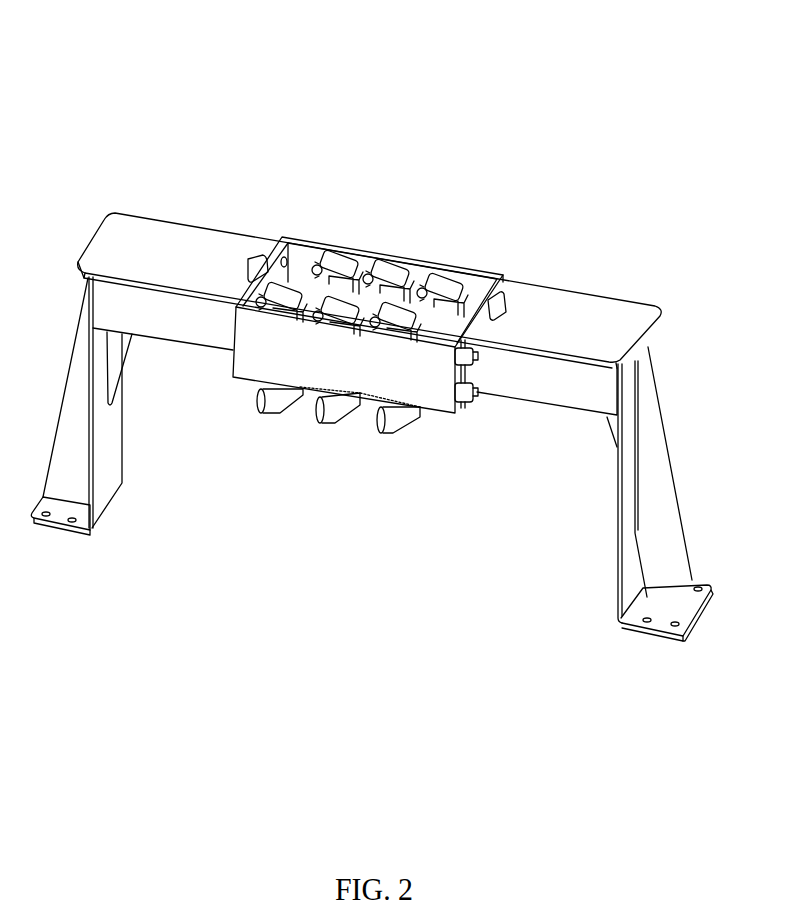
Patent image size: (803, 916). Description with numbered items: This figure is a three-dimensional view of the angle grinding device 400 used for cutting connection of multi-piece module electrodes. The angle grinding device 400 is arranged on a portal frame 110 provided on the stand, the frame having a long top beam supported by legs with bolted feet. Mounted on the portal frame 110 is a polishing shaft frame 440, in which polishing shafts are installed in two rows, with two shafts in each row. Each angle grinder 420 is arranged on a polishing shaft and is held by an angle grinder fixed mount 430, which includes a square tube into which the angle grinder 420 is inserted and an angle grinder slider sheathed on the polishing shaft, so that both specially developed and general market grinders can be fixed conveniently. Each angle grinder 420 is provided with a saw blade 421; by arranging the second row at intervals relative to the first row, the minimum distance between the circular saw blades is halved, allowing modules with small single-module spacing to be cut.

The portal frame 110 is at (172, 258).
The angle grinding device 400 is at (432, 377).
The angle grinder fixed mount 430 is at (320, 272).
The polishing shaft frame 440 is at (470, 275).
The angle grinder 420 is at (347, 400).
The saw blade 421 is at (262, 417).